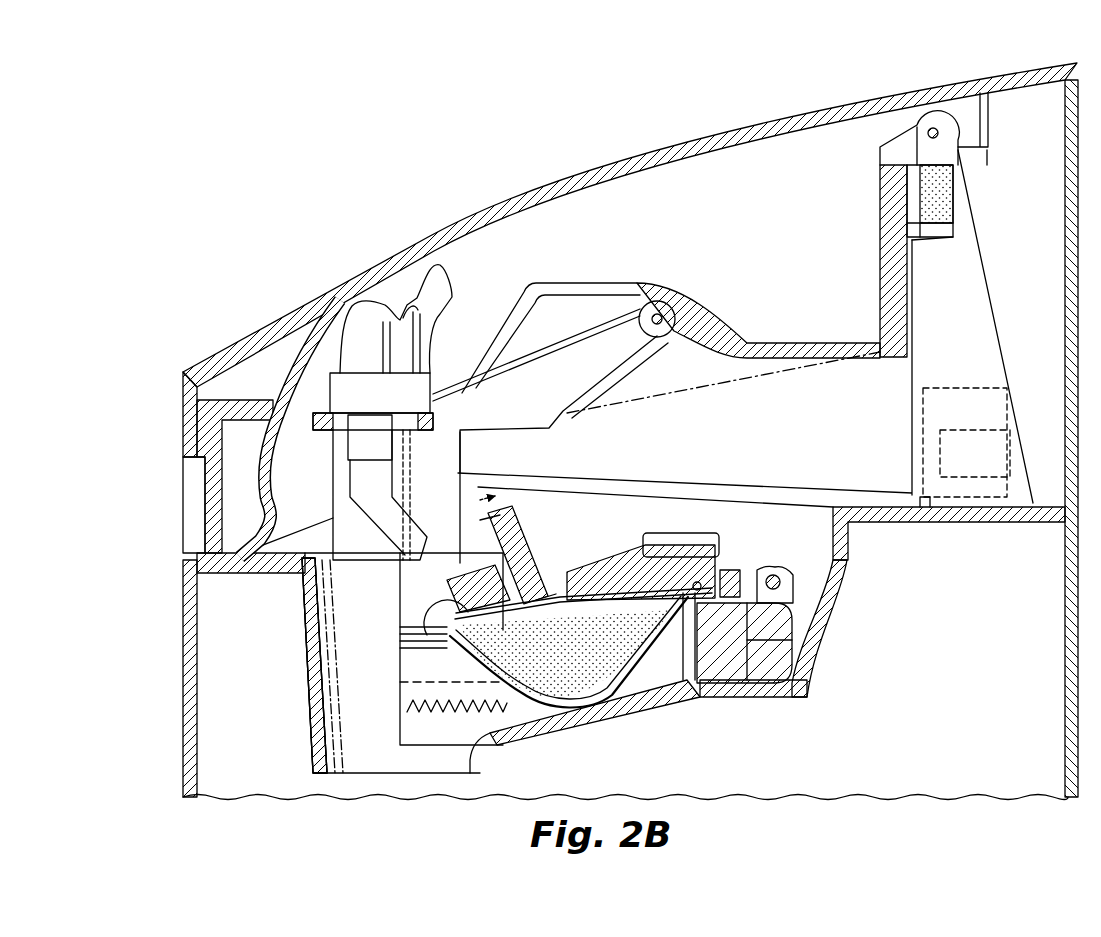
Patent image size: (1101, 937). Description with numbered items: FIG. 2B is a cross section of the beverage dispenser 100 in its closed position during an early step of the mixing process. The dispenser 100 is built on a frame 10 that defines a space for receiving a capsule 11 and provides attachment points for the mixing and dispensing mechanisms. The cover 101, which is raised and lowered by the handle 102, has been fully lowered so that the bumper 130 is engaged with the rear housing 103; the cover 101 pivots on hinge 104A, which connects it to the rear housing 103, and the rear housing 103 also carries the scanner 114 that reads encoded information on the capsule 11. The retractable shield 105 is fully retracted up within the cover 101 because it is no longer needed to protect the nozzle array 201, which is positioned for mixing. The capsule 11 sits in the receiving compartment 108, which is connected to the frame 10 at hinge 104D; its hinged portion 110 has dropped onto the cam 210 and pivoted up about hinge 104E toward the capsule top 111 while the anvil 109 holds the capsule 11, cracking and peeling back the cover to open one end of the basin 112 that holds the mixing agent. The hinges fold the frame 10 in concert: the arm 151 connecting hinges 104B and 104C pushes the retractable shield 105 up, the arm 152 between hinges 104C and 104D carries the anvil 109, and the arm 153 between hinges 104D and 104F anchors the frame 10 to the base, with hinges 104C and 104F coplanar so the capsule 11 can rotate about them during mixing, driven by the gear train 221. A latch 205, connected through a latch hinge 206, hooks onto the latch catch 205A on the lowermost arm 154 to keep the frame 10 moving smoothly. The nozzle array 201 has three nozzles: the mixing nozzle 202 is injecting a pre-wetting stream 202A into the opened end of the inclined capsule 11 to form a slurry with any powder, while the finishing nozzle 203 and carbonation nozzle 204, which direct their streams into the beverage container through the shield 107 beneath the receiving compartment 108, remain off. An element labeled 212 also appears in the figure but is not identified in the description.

The dispenser 100 is at (275, 176).
The cover 101 is at (685, 137).
The handle 102 is at (195, 470).
The rear housing 103 is at (995, 308).
The hinge 104A is at (933, 128).
The hinge 104B is at (661, 318).
The hinge 104C is at (330, 708).
The hinge 104F is at (314, 665).
The hinge 104D is at (775, 575).
The hinge 104E is at (562, 562).
The retractable shield 105 is at (278, 363).
The shield 107 is at (440, 625).
The receiving compartment 108 is at (773, 578).
The anvil 109 is at (590, 598).
The hinged portion 110 is at (510, 507).
The capsule top 111 is at (527, 550).
The basin 112 is at (593, 717).
The scanner 114 is at (985, 480).
The bumper 130 is at (955, 192).
The arm 151 is at (563, 410).
The arm 152 is at (733, 565).
The arm 153 is at (780, 633).
The lowermost arm 154 is at (783, 663).
The nozzle array 201 is at (330, 367).
The mixing nozzle 202 is at (420, 530).
The pre-wetting stream 202A is at (415, 560).
The finishing nozzle 203 is at (422, 533).
The carbonation nozzle 204 is at (412, 535).
The latch 205 is at (720, 697).
The latch catch 205A is at (683, 697).
The latch hinge 206 is at (800, 627).
The cam 210 is at (478, 560).
The bracket 212 is at (462, 432).
The gear train 221 is at (520, 720).
The frame 10 is at (847, 565).
The capsule 11 is at (492, 676).